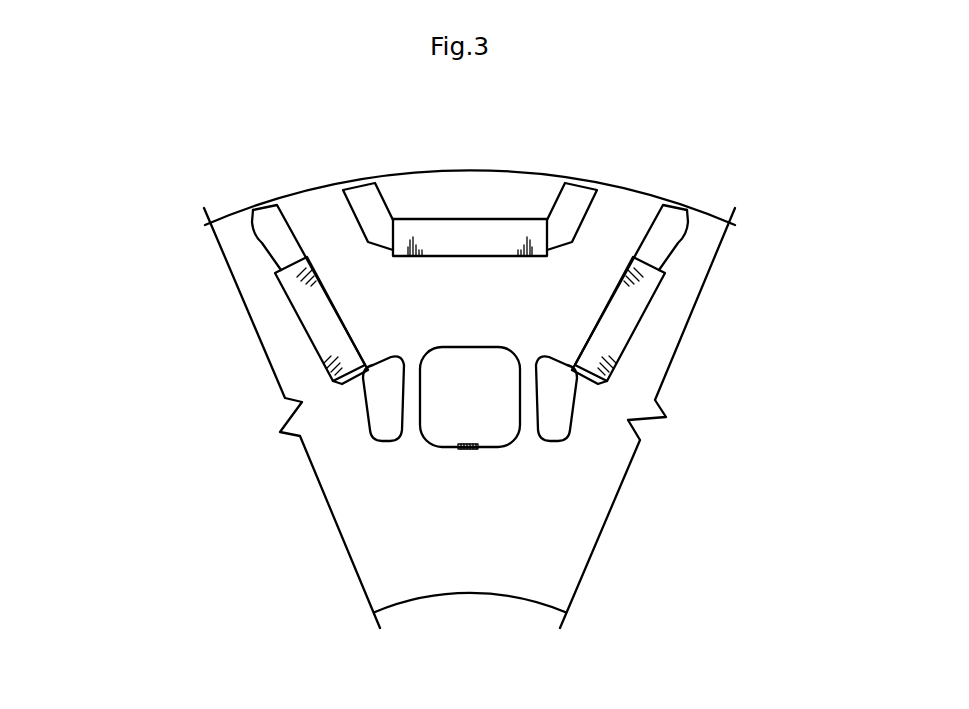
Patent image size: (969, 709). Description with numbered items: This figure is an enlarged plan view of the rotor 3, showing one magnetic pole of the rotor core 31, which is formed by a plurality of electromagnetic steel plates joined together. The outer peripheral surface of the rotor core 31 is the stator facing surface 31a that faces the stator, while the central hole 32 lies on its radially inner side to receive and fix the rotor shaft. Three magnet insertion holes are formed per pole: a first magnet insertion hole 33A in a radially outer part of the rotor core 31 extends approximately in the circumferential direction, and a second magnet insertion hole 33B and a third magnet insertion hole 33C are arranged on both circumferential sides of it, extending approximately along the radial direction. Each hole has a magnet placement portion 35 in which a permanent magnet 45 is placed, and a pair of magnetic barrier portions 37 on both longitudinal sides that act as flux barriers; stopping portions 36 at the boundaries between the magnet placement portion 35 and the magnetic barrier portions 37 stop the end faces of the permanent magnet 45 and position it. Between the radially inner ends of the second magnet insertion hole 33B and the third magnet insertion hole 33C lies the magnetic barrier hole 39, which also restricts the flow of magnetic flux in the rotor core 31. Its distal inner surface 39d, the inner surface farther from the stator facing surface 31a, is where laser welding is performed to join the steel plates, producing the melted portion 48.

The stator 3 is at (133, 122).
The rotor core 31 is at (650, 186).
The stator facing surface 31a is at (468, 168).
The central hole 32 is at (518, 600).
The first magnet insertion hole 33A is at (442, 221).
The second magnet insertion hole 33B is at (299, 322).
The third magnet insertion hole 33C is at (693, 341).
The magnet placement portion 35 is at (636, 307).
The stopping portion 36 is at (603, 383).
The magnetic barrier portion 37 is at (563, 408).
The magnetic barrier hole 39 is at (480, 347).
The distal inner surface 39d is at (484, 428).
The permanent magnet 45 is at (495, 235).
The melted portion 48 is at (467, 446).